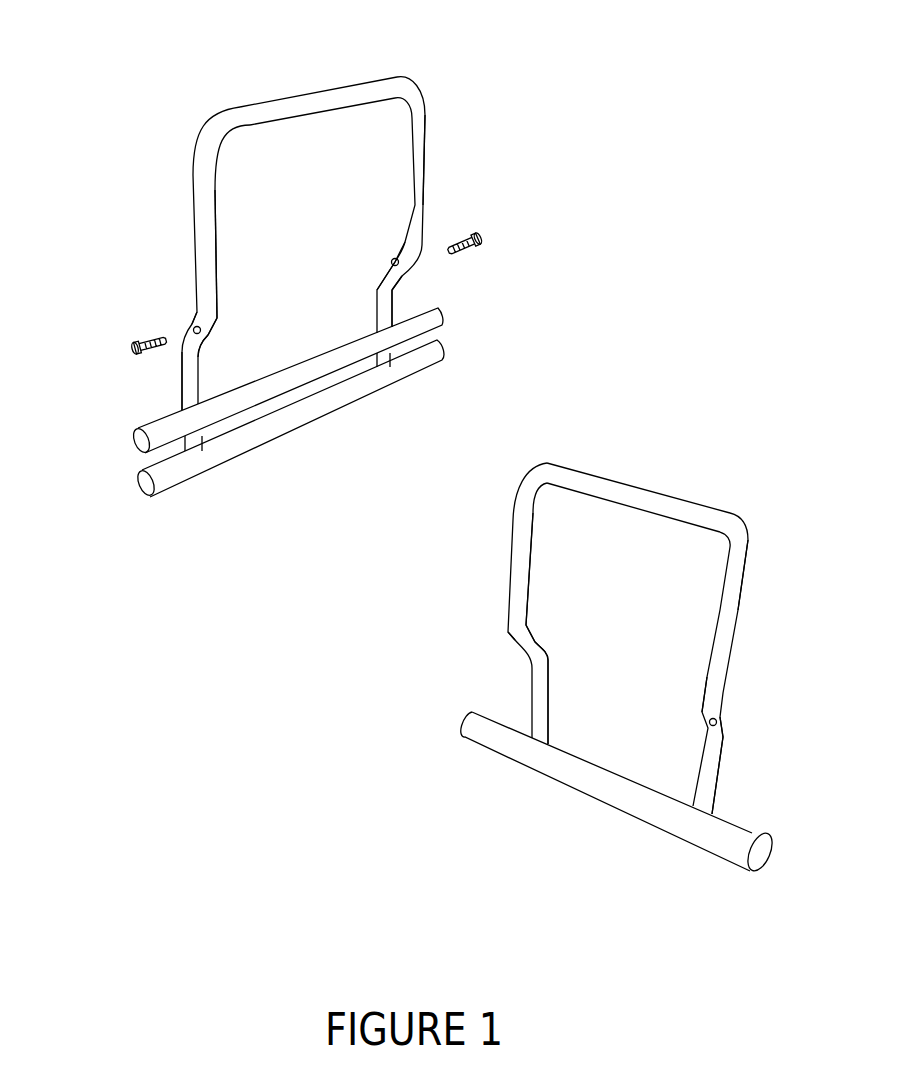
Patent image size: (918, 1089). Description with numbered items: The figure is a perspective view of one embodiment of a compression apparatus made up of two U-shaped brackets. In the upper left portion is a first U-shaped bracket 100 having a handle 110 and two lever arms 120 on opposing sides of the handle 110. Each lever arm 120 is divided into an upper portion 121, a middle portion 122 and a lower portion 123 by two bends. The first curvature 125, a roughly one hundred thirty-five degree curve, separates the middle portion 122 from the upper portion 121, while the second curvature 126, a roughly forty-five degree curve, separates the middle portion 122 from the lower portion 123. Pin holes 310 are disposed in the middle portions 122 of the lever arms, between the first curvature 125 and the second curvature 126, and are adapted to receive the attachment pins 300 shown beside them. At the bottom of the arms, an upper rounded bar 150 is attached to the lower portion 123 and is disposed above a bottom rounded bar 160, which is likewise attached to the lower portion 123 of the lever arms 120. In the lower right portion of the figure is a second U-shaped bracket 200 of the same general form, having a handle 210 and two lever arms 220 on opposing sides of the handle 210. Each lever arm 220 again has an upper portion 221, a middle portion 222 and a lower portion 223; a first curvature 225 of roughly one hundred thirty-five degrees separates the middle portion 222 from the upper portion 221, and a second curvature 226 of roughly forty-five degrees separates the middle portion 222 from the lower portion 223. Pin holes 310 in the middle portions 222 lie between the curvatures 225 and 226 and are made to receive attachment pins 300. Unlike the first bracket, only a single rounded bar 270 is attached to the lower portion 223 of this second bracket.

The first U-shaped bracket 100 is at (443, 379).
The handle 110 is at (302, 99).
The lever arm 120 is at (203, 233).
The upper portion 121 is at (215, 190).
The middle portion 122 is at (205, 335).
The lower portion 123 is at (182, 387).
The first curvature 125 is at (198, 312).
The second curvature 126 is at (198, 350).
The upper rounded bar 150 is at (155, 421).
The bottom rounded bar 160 is at (136, 479).
The U-shaped bracket 200 is at (615, 621).
The handle 210 is at (648, 500).
The lever arm 220 is at (520, 565).
The upper portion 221 is at (533, 538).
The middle portion 222 is at (530, 635).
The lower portion 223 is at (548, 712).
The first curvature 225 is at (508, 628).
The second curvature 226 is at (548, 658).
The single rounded bar 270 is at (758, 832).
The attachment pin 300 is at (130, 348).
The pin hole 310 is at (201, 330).